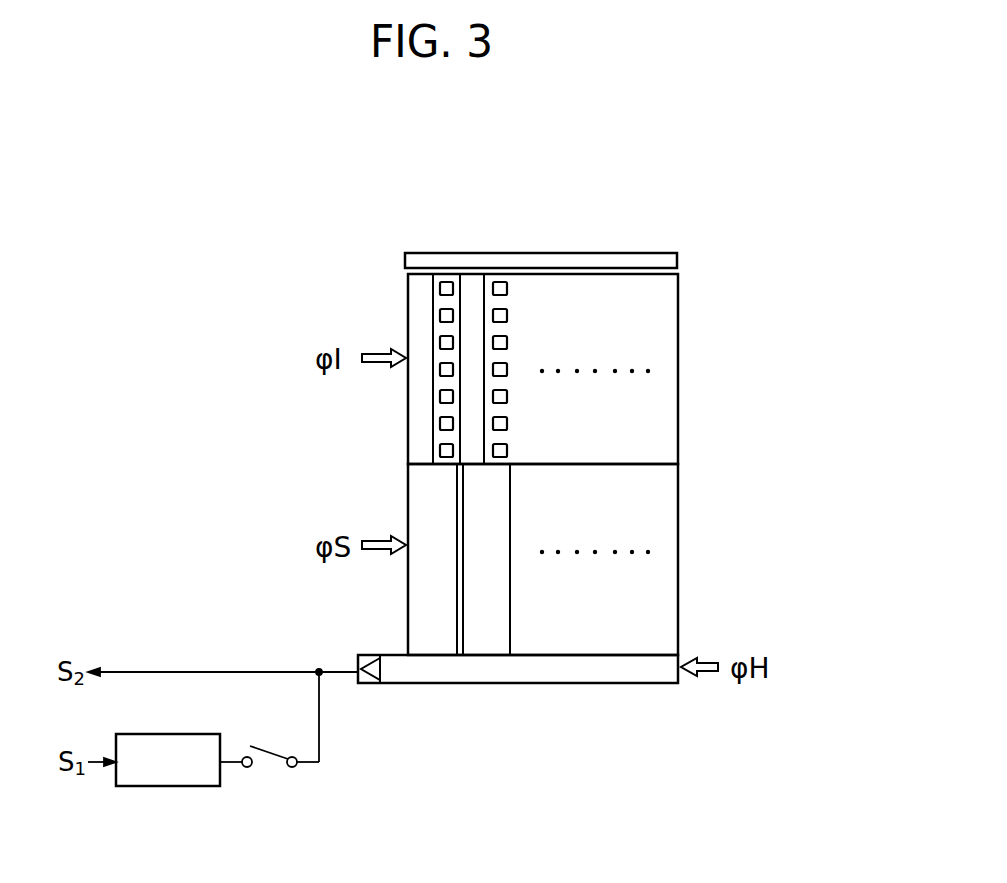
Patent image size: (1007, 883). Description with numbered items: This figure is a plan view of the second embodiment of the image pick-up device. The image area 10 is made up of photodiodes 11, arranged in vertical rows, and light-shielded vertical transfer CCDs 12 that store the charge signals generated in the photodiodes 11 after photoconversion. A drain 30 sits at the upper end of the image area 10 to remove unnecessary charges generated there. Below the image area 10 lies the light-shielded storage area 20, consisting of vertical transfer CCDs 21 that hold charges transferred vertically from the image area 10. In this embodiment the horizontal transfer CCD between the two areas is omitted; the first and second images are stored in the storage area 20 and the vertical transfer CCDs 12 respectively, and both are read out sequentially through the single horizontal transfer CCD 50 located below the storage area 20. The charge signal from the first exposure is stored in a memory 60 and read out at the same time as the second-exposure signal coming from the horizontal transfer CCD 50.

The image area 10 is at (678, 382).
The photodiodes 11 is at (445, 283).
The vertical transfer CCDs 12 is at (415, 296).
The storage area 20 is at (678, 580).
The vertical transfer CCDs 21 is at (435, 632).
The drain 30 is at (677, 261).
The horizontal transfer CCD 50 is at (645, 668).
The memory 60 is at (176, 786).